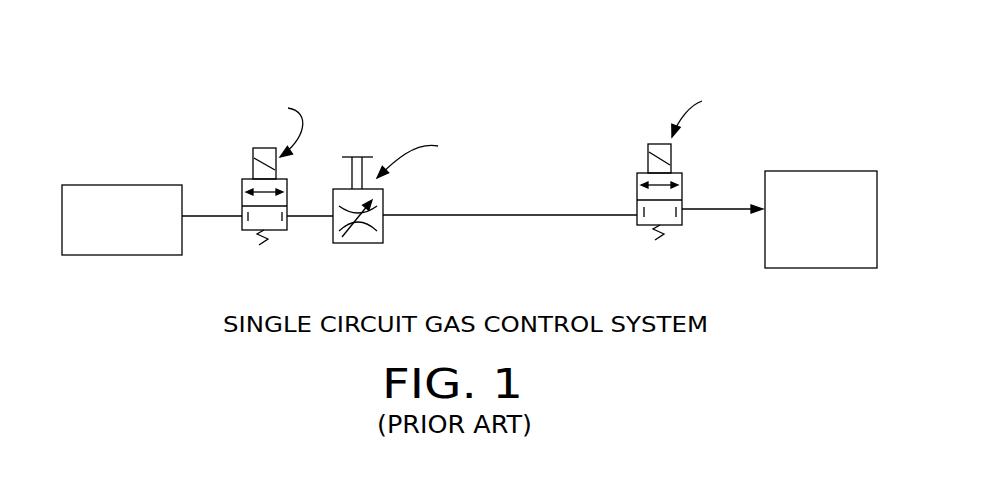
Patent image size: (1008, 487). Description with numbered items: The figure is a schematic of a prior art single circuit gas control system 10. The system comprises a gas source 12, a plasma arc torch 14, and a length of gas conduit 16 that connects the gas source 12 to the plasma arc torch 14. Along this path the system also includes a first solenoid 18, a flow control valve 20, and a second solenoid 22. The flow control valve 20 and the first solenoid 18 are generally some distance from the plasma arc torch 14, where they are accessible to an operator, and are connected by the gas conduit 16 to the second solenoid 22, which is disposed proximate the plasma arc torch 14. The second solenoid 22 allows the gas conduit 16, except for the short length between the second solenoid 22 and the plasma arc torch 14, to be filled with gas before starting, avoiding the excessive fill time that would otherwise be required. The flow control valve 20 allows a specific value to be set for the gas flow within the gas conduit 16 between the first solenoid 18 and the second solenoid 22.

The single circuit gas control system 10 is at (613, 47).
The gas source 12 is at (113, 255).
The plasma arc torch 14 is at (830, 268).
The gas conduit 16 is at (533, 215).
The first solenoid 18 is at (277, 232).
The flow control valve 20 is at (377, 243).
The second solenoid 22 is at (679, 225).